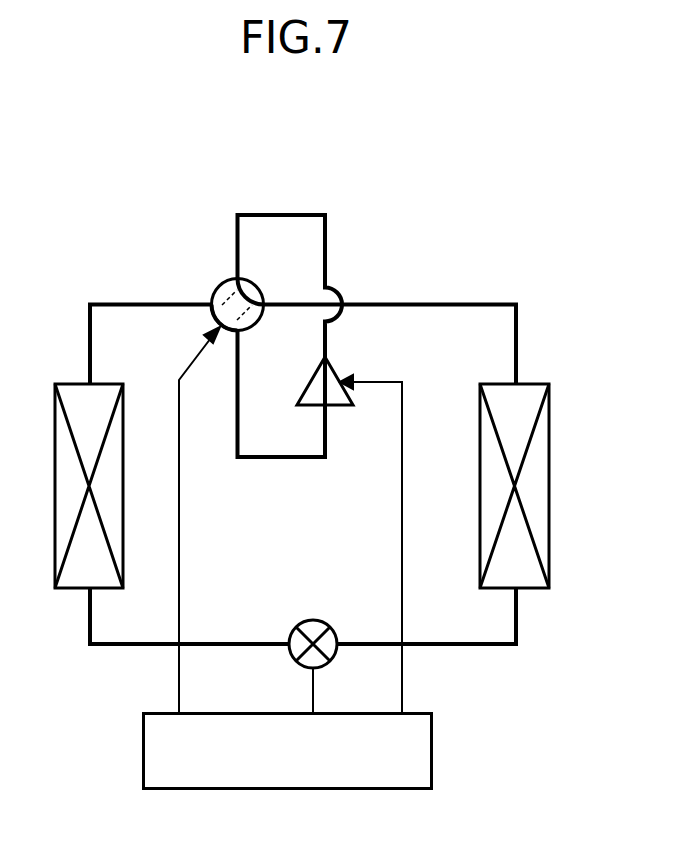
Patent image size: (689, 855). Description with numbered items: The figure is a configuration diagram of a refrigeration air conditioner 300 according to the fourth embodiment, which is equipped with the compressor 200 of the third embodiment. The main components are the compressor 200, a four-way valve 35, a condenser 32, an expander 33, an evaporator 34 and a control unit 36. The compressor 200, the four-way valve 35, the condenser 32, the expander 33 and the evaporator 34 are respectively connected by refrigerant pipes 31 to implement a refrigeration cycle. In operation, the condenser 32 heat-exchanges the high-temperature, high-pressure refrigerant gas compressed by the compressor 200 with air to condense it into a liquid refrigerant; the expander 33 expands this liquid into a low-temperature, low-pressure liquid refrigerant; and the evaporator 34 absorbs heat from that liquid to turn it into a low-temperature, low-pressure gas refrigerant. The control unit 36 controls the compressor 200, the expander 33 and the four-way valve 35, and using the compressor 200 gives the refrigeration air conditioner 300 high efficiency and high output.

The refrigeration air conditioner 300 is at (311, 156).
The refrigerant pipes 31 is at (479, 304).
The condenser 32 is at (535, 383).
The expander 33 is at (310, 620).
The evaporator 34 is at (72, 383).
The four-way valve 35 is at (217, 288).
The control unit 36 is at (236, 713).
The compressor 200 is at (340, 374).